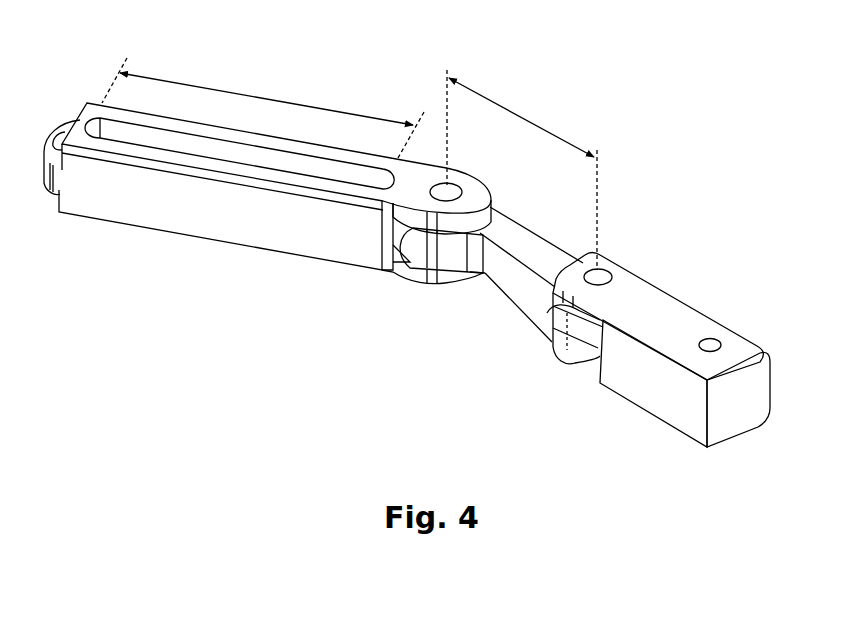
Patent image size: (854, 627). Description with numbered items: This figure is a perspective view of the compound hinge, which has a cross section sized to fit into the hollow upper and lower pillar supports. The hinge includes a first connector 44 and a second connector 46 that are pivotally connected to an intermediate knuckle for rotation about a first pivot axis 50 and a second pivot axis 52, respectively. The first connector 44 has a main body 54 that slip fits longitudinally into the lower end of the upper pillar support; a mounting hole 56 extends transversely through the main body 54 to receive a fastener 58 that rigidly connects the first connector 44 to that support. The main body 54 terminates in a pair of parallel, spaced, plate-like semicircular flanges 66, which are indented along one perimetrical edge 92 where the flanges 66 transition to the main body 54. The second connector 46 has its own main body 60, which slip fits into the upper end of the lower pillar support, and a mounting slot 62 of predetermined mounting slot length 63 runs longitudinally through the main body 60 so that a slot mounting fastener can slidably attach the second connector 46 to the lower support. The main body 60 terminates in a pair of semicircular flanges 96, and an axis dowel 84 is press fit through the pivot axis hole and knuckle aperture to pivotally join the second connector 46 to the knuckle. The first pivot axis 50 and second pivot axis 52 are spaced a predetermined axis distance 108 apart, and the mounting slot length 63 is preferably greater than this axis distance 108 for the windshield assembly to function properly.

The first connector 44 is at (667, 284).
The second connector 46 is at (267, 176).
The first pivot axis 50 is at (603, 172).
The second pivot axis 52 is at (443, 95).
The main body 54 is at (693, 320).
The mounting hole 56 is at (720, 345).
The fastener 58 is at (612, 267).
The main body 60 is at (227, 220).
The mounting slot 62 is at (185, 143).
The mounting slot length 63 is at (228, 90).
The semicircular flanges 66 is at (572, 270).
The axis dowel 84 is at (455, 192).
The perimetrical edge 92 is at (580, 312).
The semicircular flanges 96 is at (478, 194).
The axis distance 108 is at (533, 123).